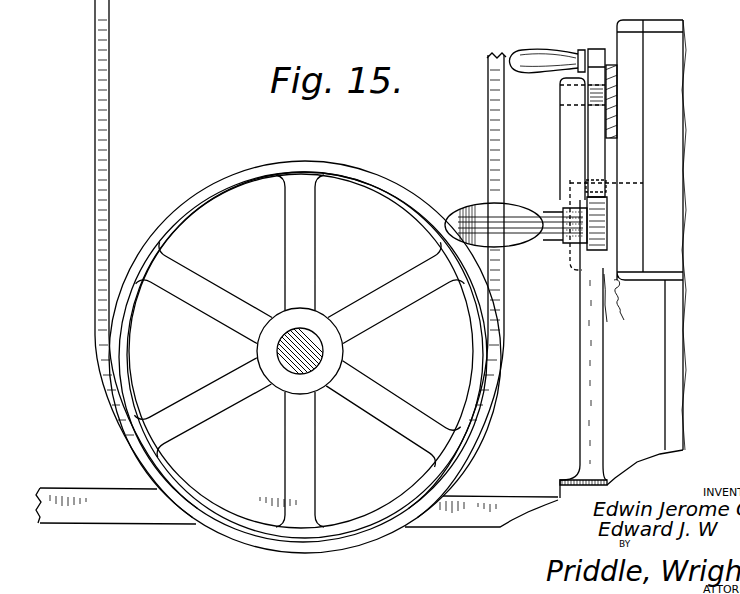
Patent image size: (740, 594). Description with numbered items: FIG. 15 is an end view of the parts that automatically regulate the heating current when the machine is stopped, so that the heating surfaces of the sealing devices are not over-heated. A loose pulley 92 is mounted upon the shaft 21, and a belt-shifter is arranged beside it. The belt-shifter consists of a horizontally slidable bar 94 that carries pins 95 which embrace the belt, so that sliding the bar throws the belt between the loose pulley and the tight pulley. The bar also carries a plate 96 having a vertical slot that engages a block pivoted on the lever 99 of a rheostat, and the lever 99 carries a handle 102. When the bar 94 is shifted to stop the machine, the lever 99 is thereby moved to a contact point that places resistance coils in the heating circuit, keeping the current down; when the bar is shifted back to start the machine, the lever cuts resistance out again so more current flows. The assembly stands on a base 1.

The base plate 1 is at (117, 513).
The shaft 21 is at (312, 330).
The loose pulley 92 is at (372, 182).
The horizontally slidable bar 94 is at (593, 250).
The pins 95 is at (510, 223).
The plate 96 is at (568, 128).
The lever 99 is at (592, 49).
The handle 102 is at (535, 54).